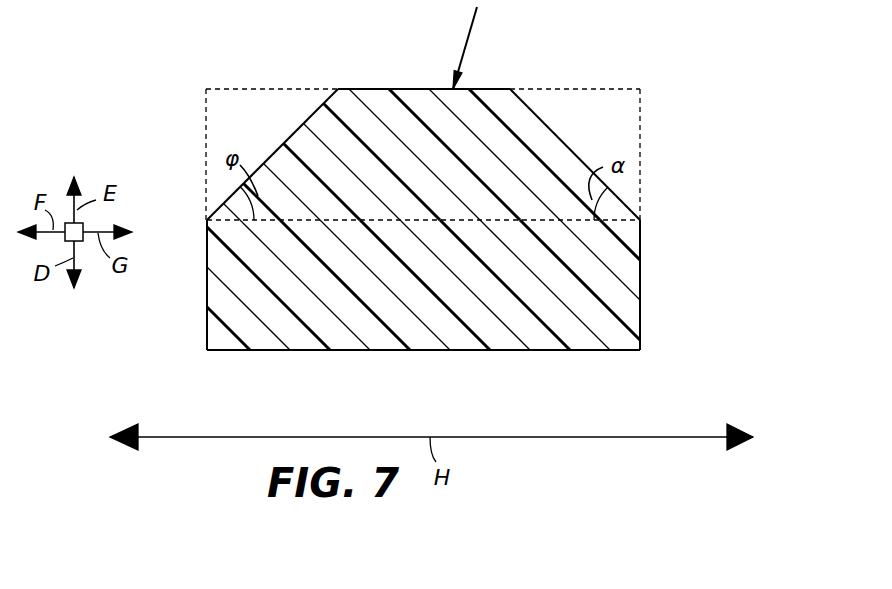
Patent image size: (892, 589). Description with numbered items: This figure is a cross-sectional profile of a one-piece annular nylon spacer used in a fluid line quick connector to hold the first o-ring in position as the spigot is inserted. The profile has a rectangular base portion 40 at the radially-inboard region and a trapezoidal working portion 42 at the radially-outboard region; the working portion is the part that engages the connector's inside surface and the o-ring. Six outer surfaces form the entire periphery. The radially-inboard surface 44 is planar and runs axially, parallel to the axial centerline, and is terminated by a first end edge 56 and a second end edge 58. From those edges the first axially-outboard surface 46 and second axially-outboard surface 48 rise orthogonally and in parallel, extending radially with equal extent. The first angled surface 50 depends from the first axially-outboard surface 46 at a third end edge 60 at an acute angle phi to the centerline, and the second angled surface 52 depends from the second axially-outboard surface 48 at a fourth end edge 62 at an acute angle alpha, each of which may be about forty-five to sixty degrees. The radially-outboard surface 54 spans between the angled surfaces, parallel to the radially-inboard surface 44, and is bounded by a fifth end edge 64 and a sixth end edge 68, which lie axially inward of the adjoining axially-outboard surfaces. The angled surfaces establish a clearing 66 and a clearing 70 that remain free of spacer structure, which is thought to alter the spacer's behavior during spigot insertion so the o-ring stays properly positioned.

The rectangular base portion 40 is at (423, 285).
The trapezoidal working portion 42 is at (412, 154).
The radially-inboard surface 44 is at (467, 350).
The first axially-outboard surface 46 is at (207, 295).
The second axially-outboard surface 48 is at (640, 310).
The first angled surface 50 is at (282, 147).
The second angled surface 52 is at (568, 147).
The radially-outboard surface 54 is at (412, 88).
The first end edge 56 is at (207, 350).
The second end edge 58 is at (640, 350).
The third end edge 60 is at (207, 220).
The fourth end edge 62 is at (640, 220).
The fifth end edge 64 is at (338, 88).
The clearing 66 is at (288, 86).
The sixth end edge 68 is at (509, 88).
The clearing 70 is at (568, 86).